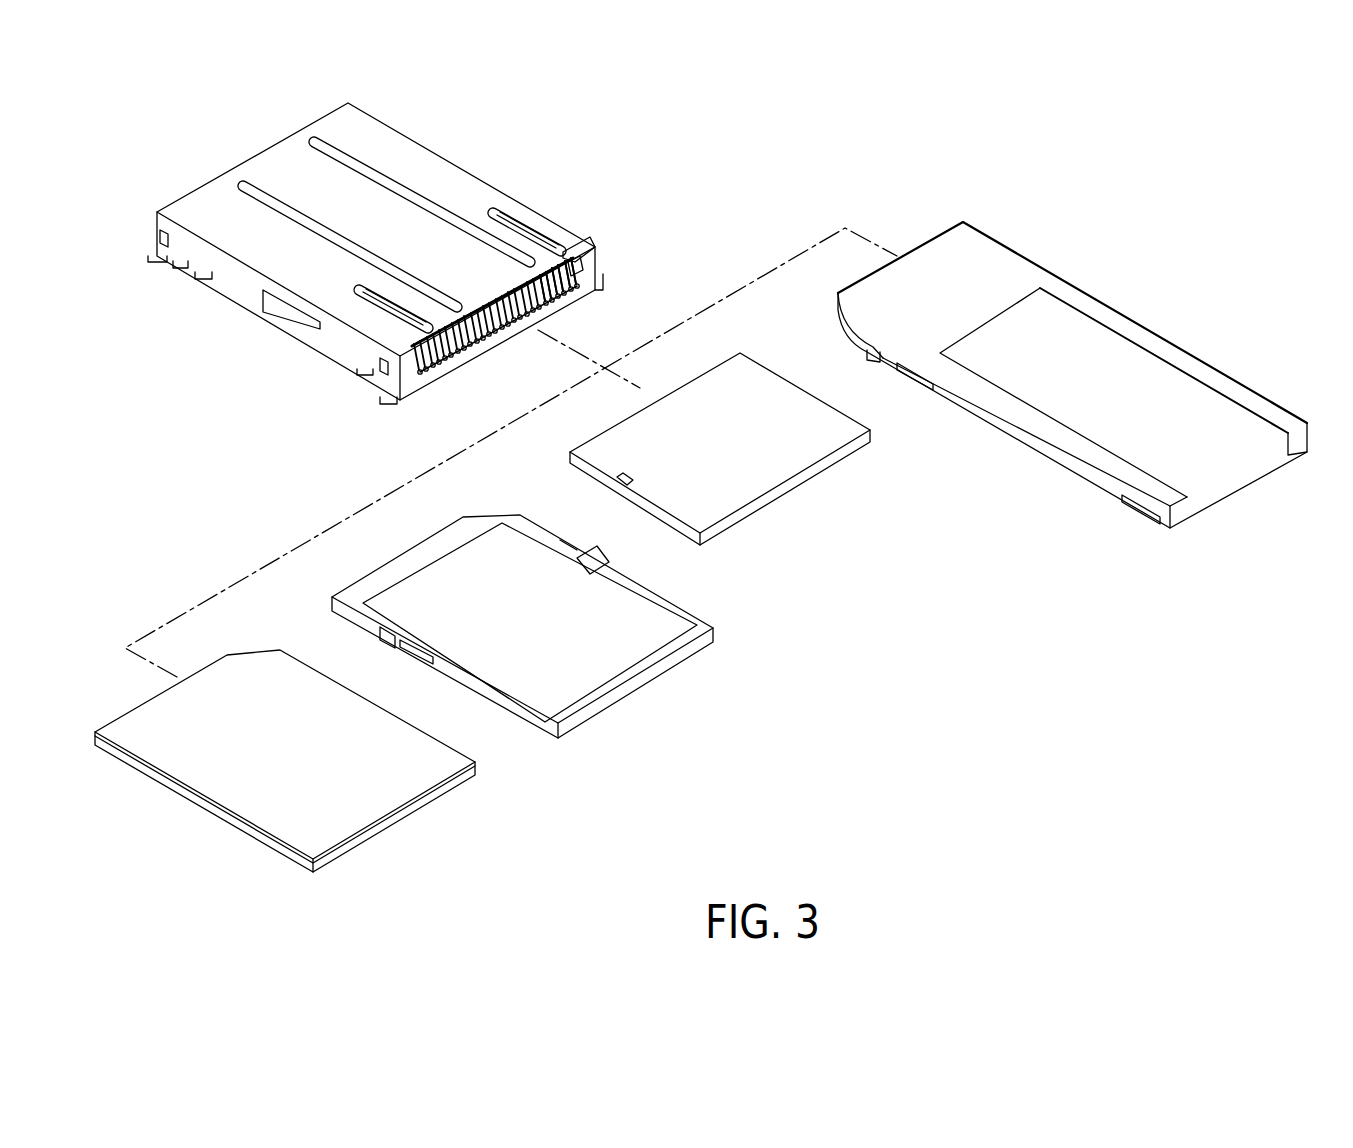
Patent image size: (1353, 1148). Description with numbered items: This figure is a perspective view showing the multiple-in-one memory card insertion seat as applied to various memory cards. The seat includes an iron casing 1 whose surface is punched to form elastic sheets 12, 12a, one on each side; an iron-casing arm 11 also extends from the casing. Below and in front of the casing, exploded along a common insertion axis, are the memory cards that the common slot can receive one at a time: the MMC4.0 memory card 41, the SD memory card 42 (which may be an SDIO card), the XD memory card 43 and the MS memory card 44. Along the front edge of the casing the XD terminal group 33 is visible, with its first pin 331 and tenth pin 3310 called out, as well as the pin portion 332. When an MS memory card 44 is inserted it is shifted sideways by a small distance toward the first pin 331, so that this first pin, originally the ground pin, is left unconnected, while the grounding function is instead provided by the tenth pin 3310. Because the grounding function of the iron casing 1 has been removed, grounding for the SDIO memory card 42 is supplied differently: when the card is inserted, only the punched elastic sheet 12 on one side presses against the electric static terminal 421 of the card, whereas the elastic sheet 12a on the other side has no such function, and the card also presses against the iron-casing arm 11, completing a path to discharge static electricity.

The iron casing 1 is at (420, 157).
The iron-casing arm 11 is at (282, 308).
The punched elastic sheet 12 is at (520, 220).
The punched elastic sheet 12a is at (400, 313).
The XD terminal group 33 is at (460, 363).
The first pin 331 is at (567, 292).
The terminal bent portion 332 is at (555, 300).
The tenth pin 3310 is at (497, 320).
The MMC4.0 memory card 41 is at (402, 793).
The SD memory card 42 is at (623, 663).
The electric static terminal 421 is at (600, 562).
The XD memory card 43 is at (795, 467).
The MS memory card 44 is at (1235, 477).